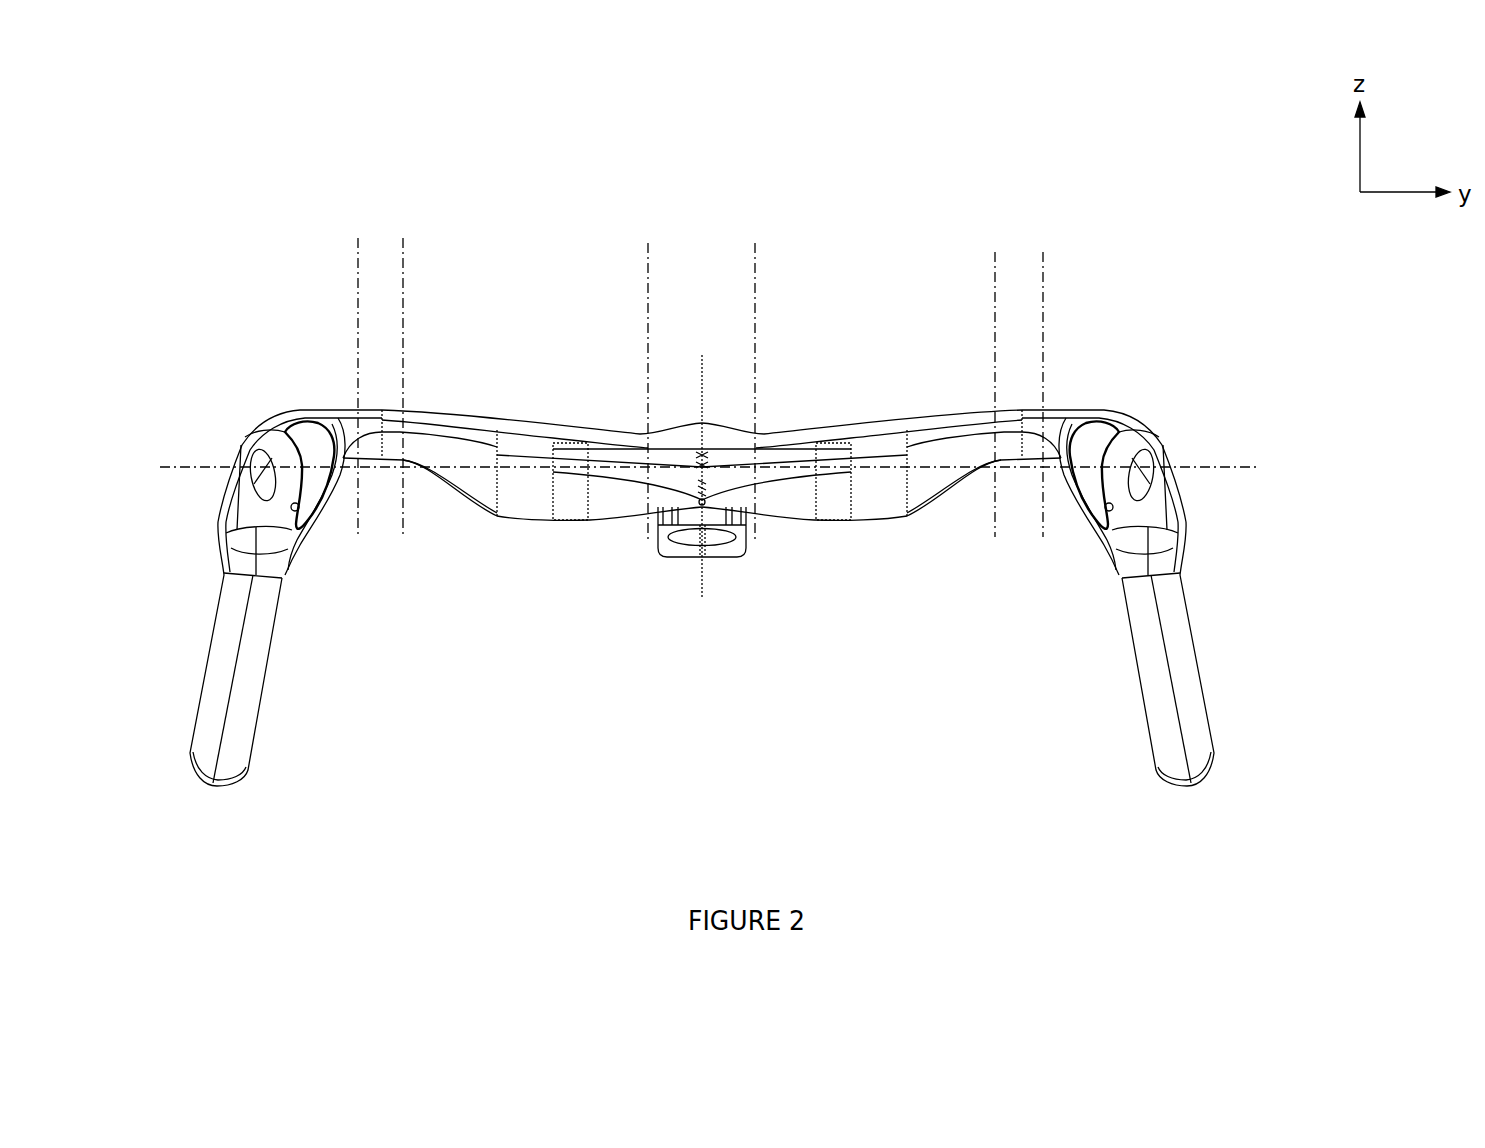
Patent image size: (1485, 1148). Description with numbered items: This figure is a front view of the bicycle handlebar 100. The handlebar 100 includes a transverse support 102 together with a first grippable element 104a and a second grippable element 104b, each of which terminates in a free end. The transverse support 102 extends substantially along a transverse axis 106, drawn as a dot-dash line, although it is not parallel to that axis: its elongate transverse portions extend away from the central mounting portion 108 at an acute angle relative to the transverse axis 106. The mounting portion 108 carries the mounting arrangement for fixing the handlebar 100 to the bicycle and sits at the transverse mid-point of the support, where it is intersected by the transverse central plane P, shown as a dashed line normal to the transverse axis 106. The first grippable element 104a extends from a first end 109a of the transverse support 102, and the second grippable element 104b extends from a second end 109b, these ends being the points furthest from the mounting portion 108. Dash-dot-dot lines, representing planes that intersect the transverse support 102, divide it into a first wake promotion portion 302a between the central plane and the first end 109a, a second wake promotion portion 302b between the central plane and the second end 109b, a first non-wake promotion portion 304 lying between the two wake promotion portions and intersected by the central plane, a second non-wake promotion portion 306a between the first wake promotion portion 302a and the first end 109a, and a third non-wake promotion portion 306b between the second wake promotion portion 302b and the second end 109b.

The handlebar 100 is at (1145, 150).
The transverse support 102 is at (551, 636).
The first grippable element 104a is at (208, 742).
The second grippable element 104b is at (1163, 737).
The transverse axis 106 is at (1260, 467).
The mounting portion 108 is at (733, 584).
The first end of the transverse support 109a is at (359, 428).
The second end of the transverse support 109b is at (1045, 428).
The first wake promotion portion 302a is at (547, 341).
The second wake promotion portion 302b is at (916, 341).
The first non-wake promotion portion 304 is at (724, 341).
The second non-wake promotion portion 306a is at (381, 253).
The third non-wake promotion portion 306b is at (1014, 270).